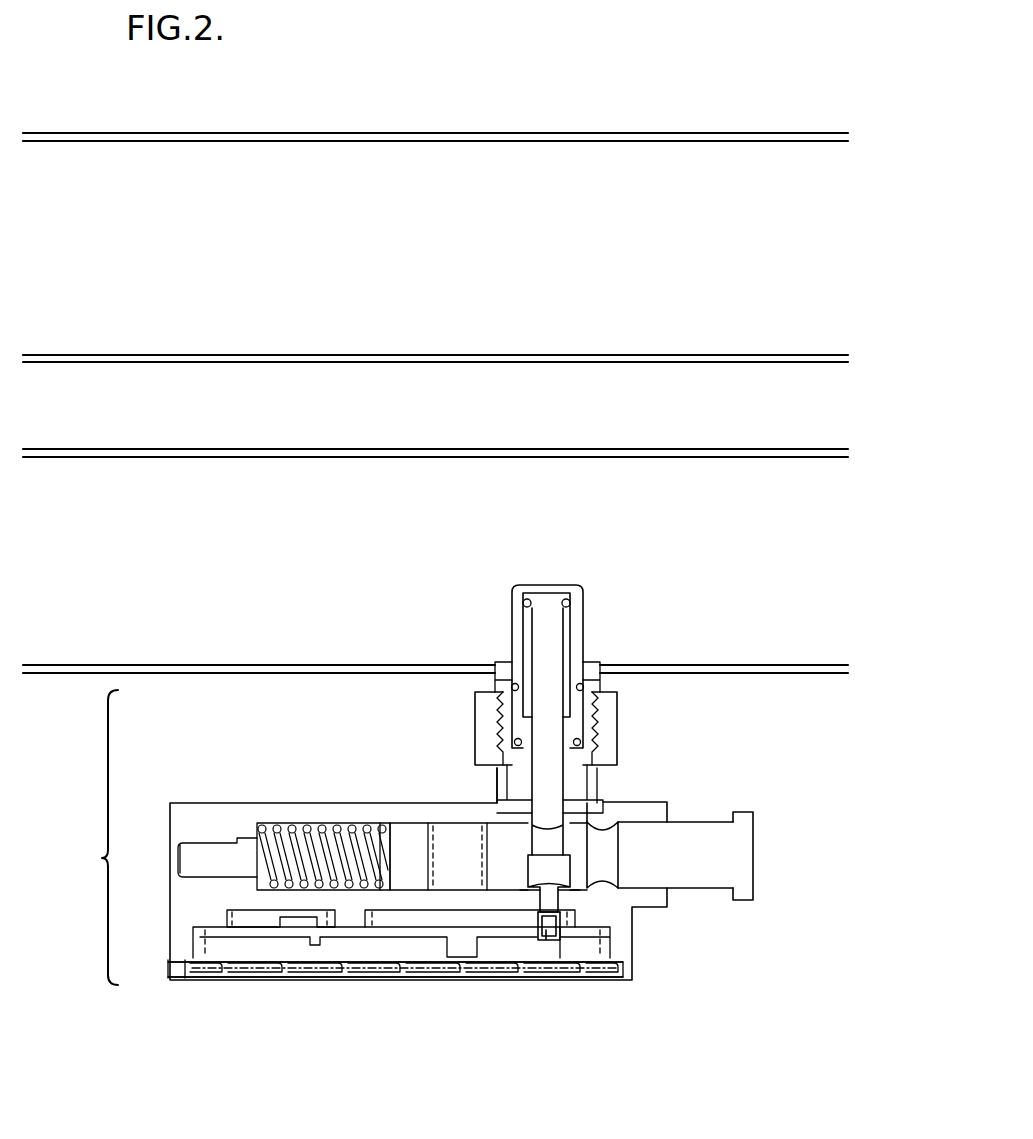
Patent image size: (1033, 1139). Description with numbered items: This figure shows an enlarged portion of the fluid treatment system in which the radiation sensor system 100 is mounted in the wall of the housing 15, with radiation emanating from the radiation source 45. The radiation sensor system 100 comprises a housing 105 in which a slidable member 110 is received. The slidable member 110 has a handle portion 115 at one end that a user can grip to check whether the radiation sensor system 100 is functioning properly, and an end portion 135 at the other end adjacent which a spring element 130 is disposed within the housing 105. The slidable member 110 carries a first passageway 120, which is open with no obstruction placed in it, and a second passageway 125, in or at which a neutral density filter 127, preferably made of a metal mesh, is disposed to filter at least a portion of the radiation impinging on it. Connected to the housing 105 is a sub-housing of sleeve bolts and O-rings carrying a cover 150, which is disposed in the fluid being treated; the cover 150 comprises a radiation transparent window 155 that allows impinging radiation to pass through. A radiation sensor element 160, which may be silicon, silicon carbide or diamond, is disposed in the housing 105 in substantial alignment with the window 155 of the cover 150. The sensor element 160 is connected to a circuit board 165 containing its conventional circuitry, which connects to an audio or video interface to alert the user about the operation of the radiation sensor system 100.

The housing 15 is at (748, 133).
The radiation source 45 is at (748, 355).
The radiation sensor system 100 is at (87, 837).
The housing 105 is at (248, 805).
The slidable member 110 is at (703, 830).
The handle portion 115 is at (742, 900).
The first passageway 120 is at (603, 873).
The second passageway 125 is at (558, 835).
The neutral density filter 127 is at (534, 877).
The spring element 130 is at (330, 830).
The end portion 135 is at (385, 850).
The cover 150 is at (583, 615).
The radiation transparent window 155 is at (548, 585).
The radiation sensor element 160 is at (546, 940).
The circuit board 165 is at (427, 976).